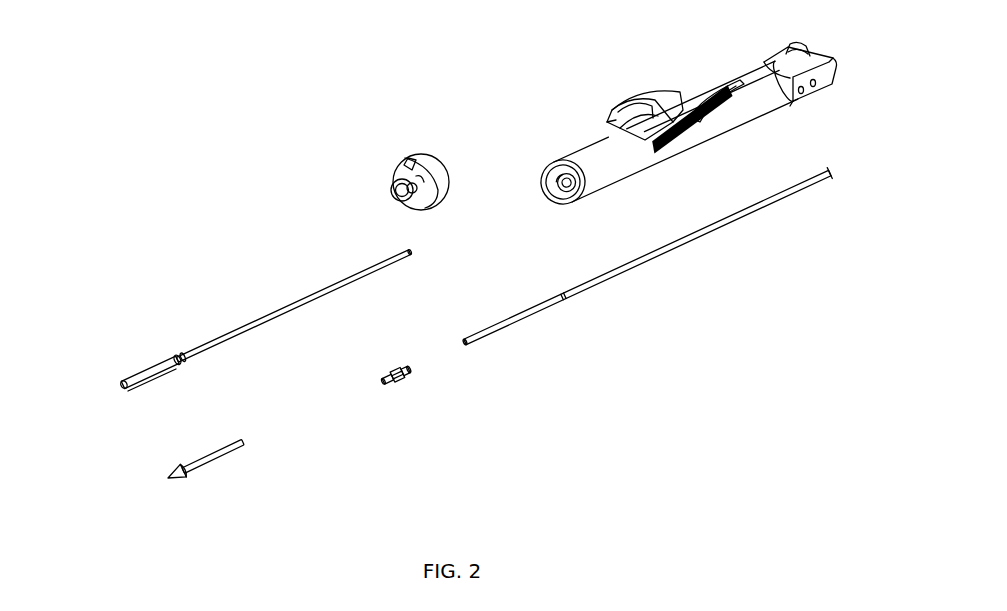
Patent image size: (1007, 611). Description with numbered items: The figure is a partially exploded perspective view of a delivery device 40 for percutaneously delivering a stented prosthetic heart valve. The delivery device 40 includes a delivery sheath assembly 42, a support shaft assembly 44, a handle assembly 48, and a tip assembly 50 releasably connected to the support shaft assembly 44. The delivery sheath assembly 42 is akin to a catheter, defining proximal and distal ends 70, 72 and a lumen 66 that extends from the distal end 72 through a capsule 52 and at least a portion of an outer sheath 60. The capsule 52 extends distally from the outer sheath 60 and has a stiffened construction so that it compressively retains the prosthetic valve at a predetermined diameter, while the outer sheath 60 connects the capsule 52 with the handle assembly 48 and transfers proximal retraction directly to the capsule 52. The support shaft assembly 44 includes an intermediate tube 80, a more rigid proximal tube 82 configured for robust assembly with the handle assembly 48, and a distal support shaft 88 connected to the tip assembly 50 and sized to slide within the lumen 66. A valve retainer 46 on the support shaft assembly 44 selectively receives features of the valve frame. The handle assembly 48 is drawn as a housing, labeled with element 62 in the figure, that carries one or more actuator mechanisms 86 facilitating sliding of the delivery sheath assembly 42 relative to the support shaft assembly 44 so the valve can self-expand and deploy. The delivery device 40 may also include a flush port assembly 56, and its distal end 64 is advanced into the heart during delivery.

The delivery device 40 is at (378, 32).
The delivery sheath assembly 42 is at (146, 353).
The support shaft assembly 44 is at (487, 418).
The valve retainer 46 is at (404, 393).
The handle assembly 48 is at (716, 82).
The tip assembly 50 is at (178, 483).
The capsule 52 is at (153, 383).
The flush port assembly 56 is at (426, 148).
The outer sheath 60 is at (350, 292).
The housing 62 is at (822, 32).
The distal end 64 is at (80, 333).
The lumen 66 is at (120, 379).
The proximal end 70 is at (413, 256).
The distal end 72 is at (116, 387).
The intermediate tube 80 is at (515, 332).
The proximal tube 82 is at (720, 246).
The actuator mechanism 86 is at (800, 56).
The distal support shaft 88 is at (216, 473).